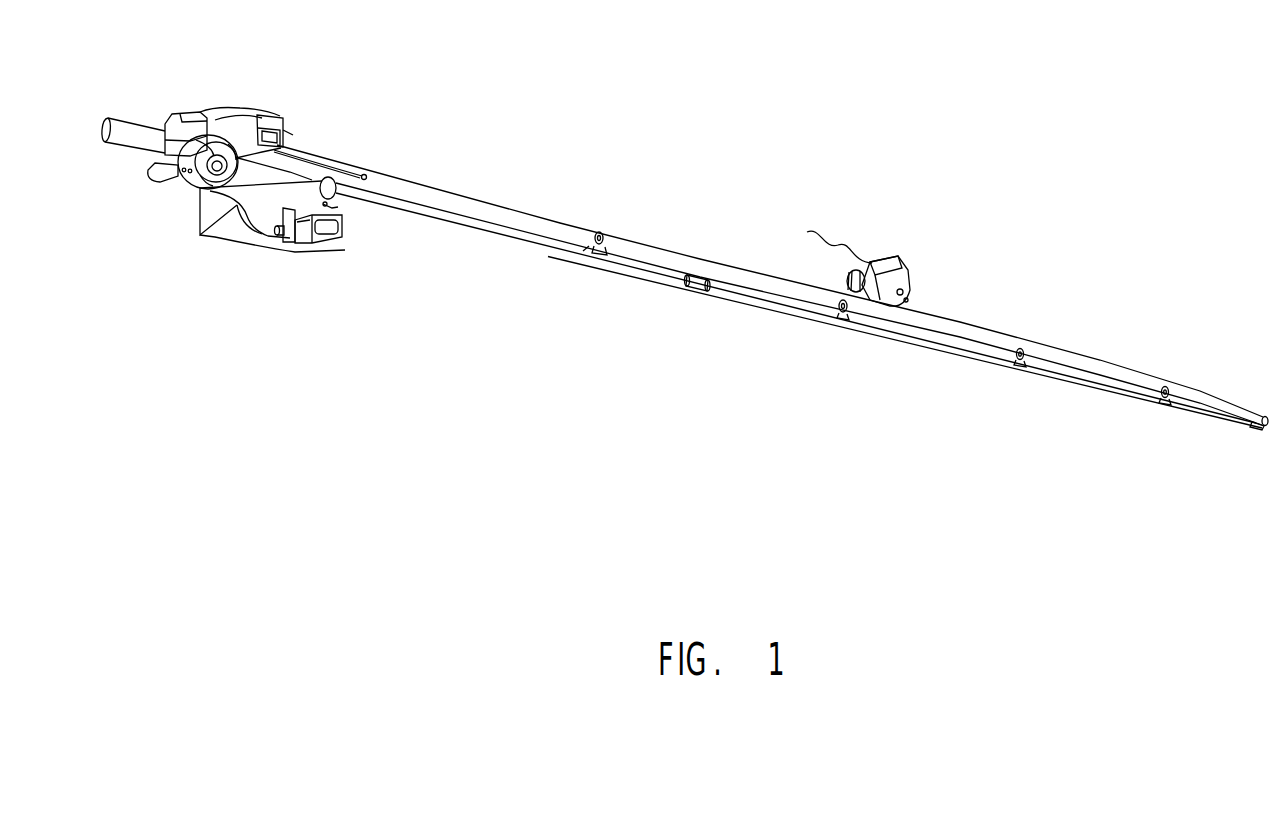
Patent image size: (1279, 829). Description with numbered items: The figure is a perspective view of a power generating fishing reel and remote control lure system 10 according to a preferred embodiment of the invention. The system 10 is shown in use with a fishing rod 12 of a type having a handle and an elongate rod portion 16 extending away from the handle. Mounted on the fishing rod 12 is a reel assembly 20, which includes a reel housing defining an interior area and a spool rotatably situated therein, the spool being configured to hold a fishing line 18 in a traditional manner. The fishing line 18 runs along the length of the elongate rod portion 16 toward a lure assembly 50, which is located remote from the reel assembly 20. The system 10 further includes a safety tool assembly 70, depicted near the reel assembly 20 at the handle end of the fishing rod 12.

The fishing reel and remote control lure system 10 is at (322, 108).
The fishing rod 12 is at (540, 286).
The elongate rod portion 16 is at (723, 293).
The fishing line 18 is at (498, 206).
The reel assembly 20 is at (211, 102).
The lure assembly 50 is at (907, 257).
The safety tool assembly 70 is at (334, 262).